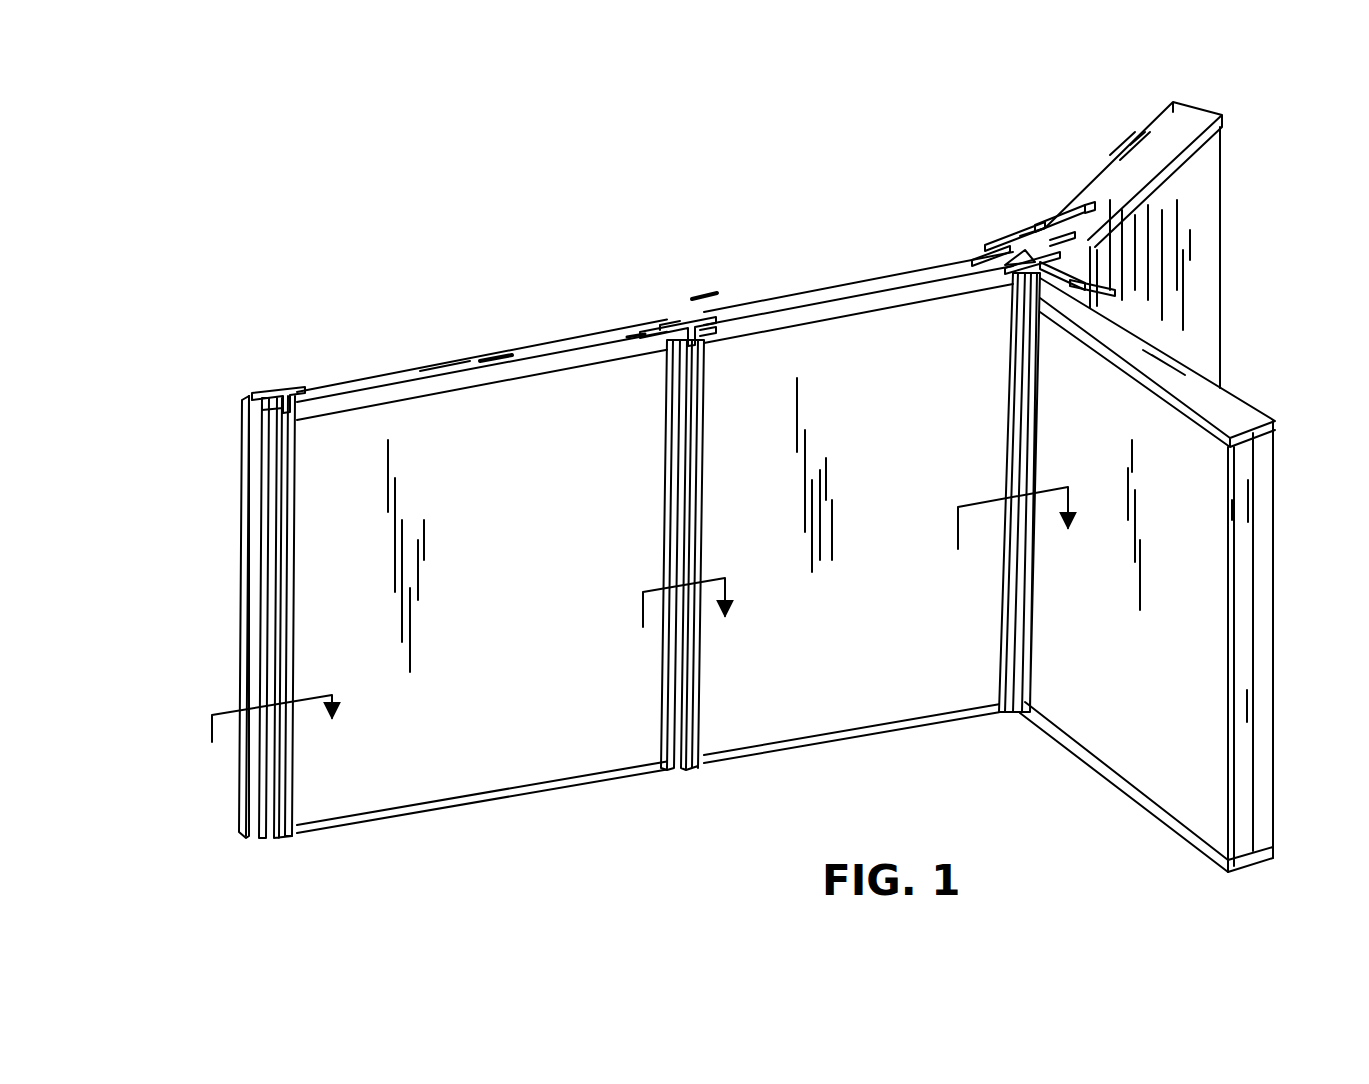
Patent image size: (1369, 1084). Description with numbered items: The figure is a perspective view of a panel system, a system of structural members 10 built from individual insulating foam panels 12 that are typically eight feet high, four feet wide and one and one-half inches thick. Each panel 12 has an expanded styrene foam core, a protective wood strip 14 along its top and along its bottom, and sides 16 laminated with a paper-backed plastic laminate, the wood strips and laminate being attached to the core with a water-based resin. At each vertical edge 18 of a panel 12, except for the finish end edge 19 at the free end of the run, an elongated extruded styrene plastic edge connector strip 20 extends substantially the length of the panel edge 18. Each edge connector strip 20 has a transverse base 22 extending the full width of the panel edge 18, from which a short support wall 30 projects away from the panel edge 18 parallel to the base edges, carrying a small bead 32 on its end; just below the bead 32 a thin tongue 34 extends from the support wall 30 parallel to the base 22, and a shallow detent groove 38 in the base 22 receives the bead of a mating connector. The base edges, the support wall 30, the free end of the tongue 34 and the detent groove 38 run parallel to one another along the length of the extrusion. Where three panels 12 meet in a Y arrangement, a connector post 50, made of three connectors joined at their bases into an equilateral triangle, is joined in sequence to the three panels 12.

The system of structural members 10 is at (446, 272).
The insulating foam panel 12 is at (545, 340).
The protective wood strip 14 is at (482, 358).
The side 16 is at (578, 378).
The vertical edge 18 is at (262, 397).
The finish end edge 19 is at (1262, 500).
The edge connector strip 20 is at (236, 612).
The transverse base 22 is at (293, 626).
The support wall 30 is at (254, 404).
The bead 32 is at (246, 523).
The tongue 34 is at (282, 531).
The detent groove 38 is at (278, 458).
The connector post 50 is at (990, 234).